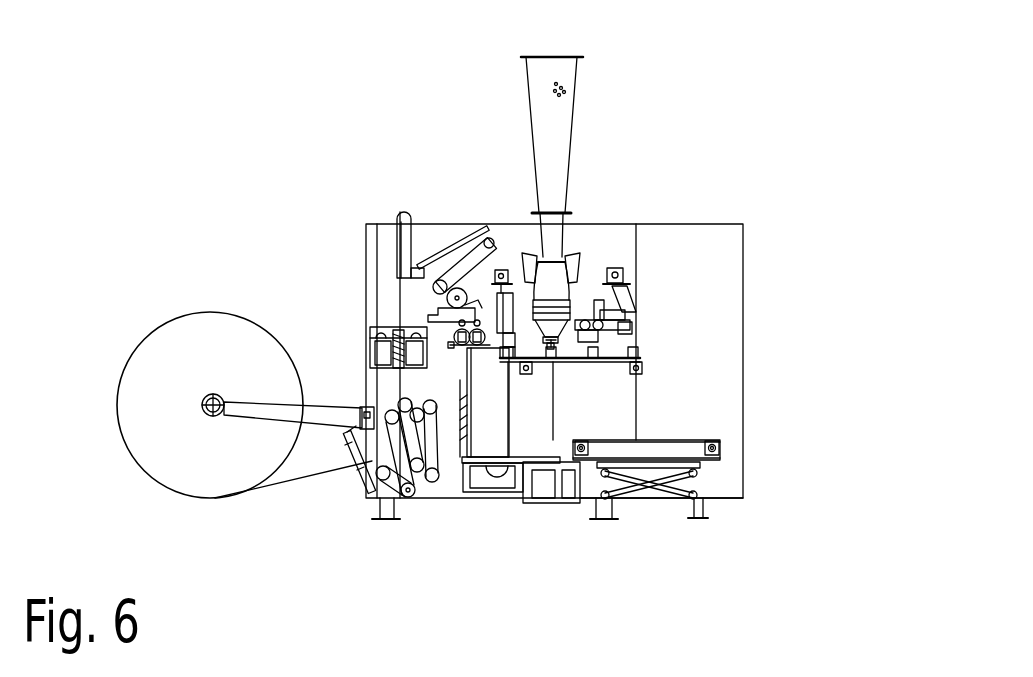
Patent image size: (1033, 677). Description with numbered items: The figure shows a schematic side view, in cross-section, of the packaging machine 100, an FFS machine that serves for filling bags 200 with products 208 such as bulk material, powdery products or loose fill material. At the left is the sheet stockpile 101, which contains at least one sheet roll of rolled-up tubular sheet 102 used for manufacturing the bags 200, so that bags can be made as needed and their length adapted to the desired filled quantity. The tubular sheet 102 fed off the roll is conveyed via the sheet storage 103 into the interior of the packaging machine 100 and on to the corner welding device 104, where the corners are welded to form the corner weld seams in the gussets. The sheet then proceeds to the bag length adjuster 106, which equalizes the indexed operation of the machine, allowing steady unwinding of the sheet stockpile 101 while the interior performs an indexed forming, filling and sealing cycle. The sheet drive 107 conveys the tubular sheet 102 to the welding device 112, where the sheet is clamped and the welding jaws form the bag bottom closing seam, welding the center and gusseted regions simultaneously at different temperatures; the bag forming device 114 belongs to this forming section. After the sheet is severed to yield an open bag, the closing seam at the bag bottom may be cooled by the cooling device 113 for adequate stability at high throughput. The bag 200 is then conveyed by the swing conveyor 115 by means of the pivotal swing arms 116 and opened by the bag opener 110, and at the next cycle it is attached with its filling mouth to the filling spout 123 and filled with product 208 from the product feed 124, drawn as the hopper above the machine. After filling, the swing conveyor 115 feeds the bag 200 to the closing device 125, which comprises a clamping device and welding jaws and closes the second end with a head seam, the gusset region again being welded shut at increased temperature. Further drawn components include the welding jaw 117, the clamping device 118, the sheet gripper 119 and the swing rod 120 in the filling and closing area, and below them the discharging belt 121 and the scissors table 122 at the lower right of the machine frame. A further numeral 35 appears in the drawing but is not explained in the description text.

The packaging machine 100 is at (128, 80).
The sheet stockpile 101 is at (138, 373).
The tubular sheet 102 is at (279, 494).
The sheet storage 103 is at (387, 492).
The corner welding device 104 is at (362, 328).
The bag length adjuster 106 is at (444, 244).
The sheet drive 107 is at (460, 287).
The bag opener 110 is at (497, 348).
The welding device 112 is at (430, 312).
The cooling device 113 is at (457, 400).
The bag forming device 114 is at (400, 193).
The swing conveyor 115 is at (623, 267).
The swing arm 116 is at (620, 300).
The welding jaw 117 is at (607, 363).
The clamping device 118 is at (613, 367).
The sheet gripper 119 is at (590, 360).
The swing rod 120 is at (633, 333).
The discharging belt 121 is at (721, 441).
The scissors table 122 is at (705, 488).
The filling spout 123 is at (592, 257).
The product feed 124 is at (558, 125).
The closing device 125 is at (603, 267).
The bag 200 is at (505, 441).
The product 208 is at (553, 84).
The gripper jaws 35 is at (460, 348).